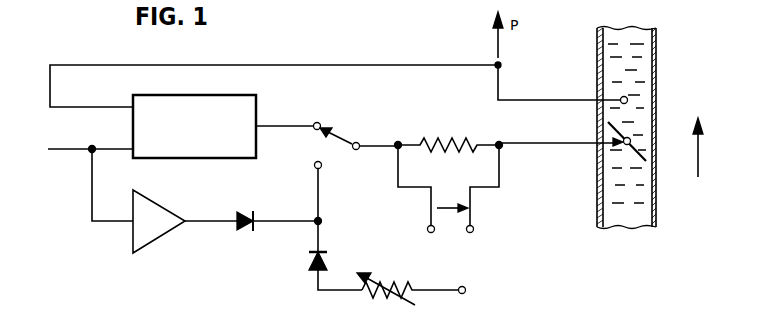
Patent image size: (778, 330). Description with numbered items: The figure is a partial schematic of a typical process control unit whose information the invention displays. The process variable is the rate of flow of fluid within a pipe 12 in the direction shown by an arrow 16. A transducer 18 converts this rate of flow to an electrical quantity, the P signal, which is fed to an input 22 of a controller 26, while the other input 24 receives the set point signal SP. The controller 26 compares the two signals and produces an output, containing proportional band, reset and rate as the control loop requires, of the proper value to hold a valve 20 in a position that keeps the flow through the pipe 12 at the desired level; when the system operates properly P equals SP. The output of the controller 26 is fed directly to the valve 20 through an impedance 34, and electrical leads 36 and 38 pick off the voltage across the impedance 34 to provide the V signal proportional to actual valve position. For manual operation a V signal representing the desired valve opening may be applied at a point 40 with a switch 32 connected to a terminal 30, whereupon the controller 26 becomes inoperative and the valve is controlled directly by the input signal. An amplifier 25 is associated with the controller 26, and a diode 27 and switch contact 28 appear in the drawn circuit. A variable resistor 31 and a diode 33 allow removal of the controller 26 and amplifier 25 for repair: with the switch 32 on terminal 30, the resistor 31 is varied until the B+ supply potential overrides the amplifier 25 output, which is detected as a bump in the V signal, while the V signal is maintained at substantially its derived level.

The pipe 12 is at (657, 108).
The arrow 16 is at (699, 149).
The transducer 18 is at (622, 95).
The valve 20 is at (610, 136).
The input 22 is at (128, 102).
The input 24 is at (115, 152).
The amplifier 25 is at (150, 237).
The controller 26 is at (195, 159).
The diode 27 is at (243, 233).
The switch pivot contact 28 is at (315, 118).
The terminal 30 is at (313, 164).
The variable resistor 31 is at (412, 270).
The switch 32 is at (338, 139).
The diode 33 is at (310, 265).
The impedance 34 is at (458, 137).
The electrical lead 36 is at (431, 180).
The electrical lead 38 is at (491, 180).
The point 40 is at (78, 145).